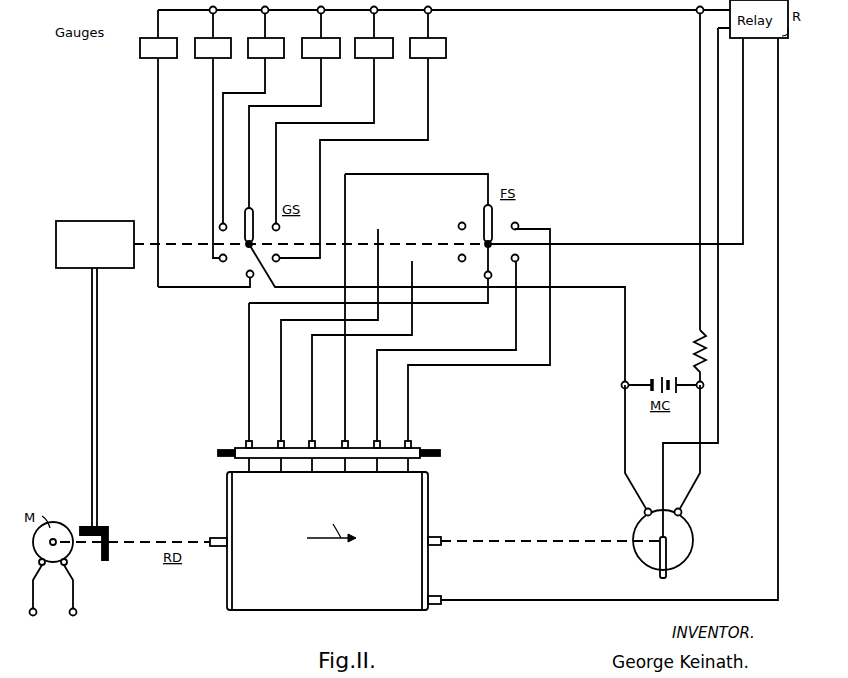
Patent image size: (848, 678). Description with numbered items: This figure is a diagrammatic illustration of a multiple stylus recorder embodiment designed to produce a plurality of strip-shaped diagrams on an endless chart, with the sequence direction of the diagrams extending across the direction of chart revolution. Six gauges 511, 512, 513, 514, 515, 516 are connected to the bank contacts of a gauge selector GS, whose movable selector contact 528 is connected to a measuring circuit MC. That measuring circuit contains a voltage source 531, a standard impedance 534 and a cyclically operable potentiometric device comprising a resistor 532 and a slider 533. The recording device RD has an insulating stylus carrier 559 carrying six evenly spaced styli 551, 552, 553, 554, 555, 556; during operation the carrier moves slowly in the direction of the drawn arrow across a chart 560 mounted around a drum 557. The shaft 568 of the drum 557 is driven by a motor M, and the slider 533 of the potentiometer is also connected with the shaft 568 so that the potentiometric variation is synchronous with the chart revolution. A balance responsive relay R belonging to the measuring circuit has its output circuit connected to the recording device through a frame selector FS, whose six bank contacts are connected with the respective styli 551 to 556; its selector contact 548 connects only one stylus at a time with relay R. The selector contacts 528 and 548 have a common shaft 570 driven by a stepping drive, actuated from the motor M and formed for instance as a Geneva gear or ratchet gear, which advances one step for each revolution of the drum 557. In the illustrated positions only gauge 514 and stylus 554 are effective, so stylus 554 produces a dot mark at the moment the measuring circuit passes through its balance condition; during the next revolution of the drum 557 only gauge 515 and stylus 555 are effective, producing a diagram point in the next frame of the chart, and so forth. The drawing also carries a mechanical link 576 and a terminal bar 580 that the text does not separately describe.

The gauge 511 is at (152, 60).
The gauge 512 is at (211, 60).
The gauge 513 is at (263, 60).
The gauge 514 is at (318, 60).
The gauge 515 is at (372, 60).
The gauge 516 is at (426, 60).
The movable selector contact 528 is at (245, 250).
The voltage source 531 is at (676, 377).
The resistor 532 is at (692, 547).
The slider 533 is at (667, 575).
The standard impedance 534 is at (692, 348).
The selector contact 548 is at (384, 238).
The stylus 551 is at (265, 470).
The stylus 552 is at (284, 465).
The stylus 553 is at (328, 470).
The stylus 554 is at (348, 465).
The stylus 555 is at (395, 470).
The stylus 556 is at (411, 465).
The drum 557 is at (450, 522).
The insulating stylus carrier 559 is at (418, 448).
The chart 560 is at (380, 604).
The shaft 568 is at (218, 538).
The common shaft 570 is at (118, 221).
The mechanical link 576 is at (165, 244).
The terminal bar 580 is at (222, 448).